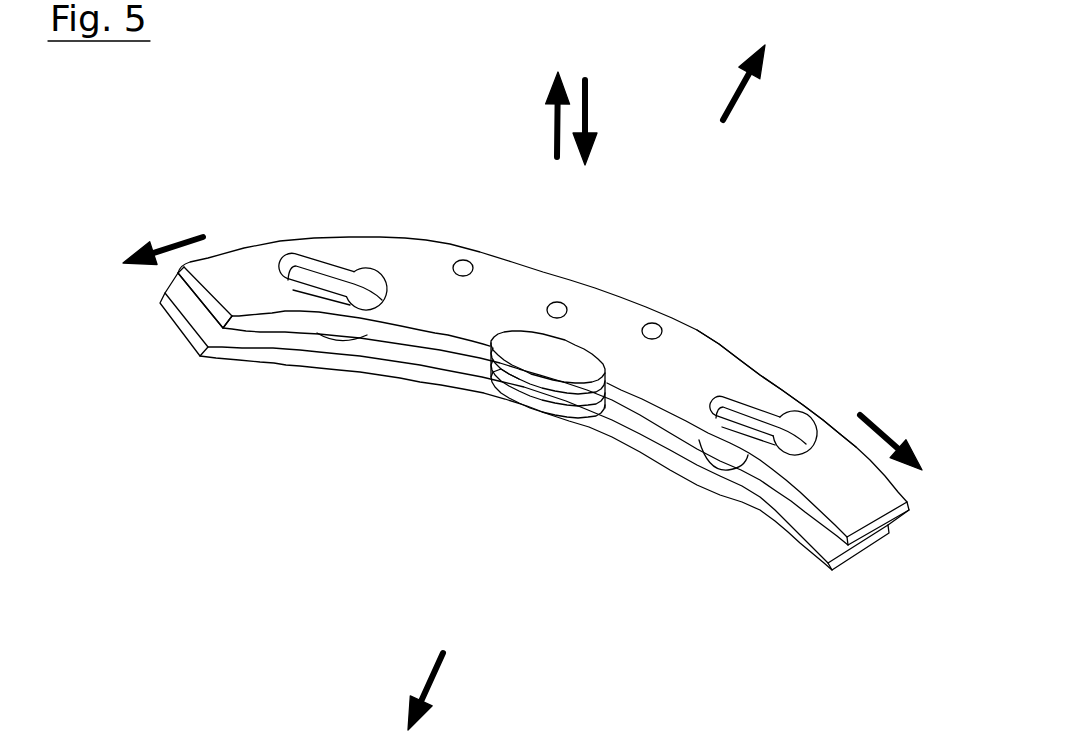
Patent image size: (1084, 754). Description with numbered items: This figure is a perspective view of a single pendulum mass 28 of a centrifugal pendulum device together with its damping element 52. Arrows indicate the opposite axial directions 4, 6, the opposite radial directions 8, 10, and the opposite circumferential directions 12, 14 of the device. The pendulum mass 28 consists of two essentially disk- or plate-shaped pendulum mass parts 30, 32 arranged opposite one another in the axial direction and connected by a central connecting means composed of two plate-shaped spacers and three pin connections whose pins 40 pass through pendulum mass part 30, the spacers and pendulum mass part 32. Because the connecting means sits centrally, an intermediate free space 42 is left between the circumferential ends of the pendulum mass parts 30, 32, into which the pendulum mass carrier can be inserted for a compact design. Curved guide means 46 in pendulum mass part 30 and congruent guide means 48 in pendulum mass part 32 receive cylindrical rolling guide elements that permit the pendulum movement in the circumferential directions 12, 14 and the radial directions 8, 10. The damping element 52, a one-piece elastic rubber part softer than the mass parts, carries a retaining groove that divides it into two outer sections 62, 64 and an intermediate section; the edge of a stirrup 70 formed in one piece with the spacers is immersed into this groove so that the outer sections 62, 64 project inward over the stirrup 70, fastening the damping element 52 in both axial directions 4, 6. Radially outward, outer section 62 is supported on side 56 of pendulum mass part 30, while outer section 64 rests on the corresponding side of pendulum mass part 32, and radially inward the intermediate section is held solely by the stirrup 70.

The axial direction 4 is at (733, 92).
The axial direction 6 is at (430, 678).
The radial direction 8 is at (552, 120).
The radial direction 10 is at (587, 102).
The circumferential direction 12 is at (175, 240).
The circumferential direction 14 is at (880, 418).
The pendulum mass 28 is at (828, 409).
The pendulum mass part 30 is at (260, 323).
The pendulum mass part 32 is at (187, 333).
The pin 40 is at (468, 258).
The free space 42 is at (204, 346).
The guide means 46 is at (373, 280).
The guide means 48 is at (348, 303).
The damping element 52 is at (485, 458).
The side 56 is at (535, 335).
The outer section 62 is at (543, 377).
The outer section 64 is at (490, 393).
The stirrup 70 is at (515, 383).